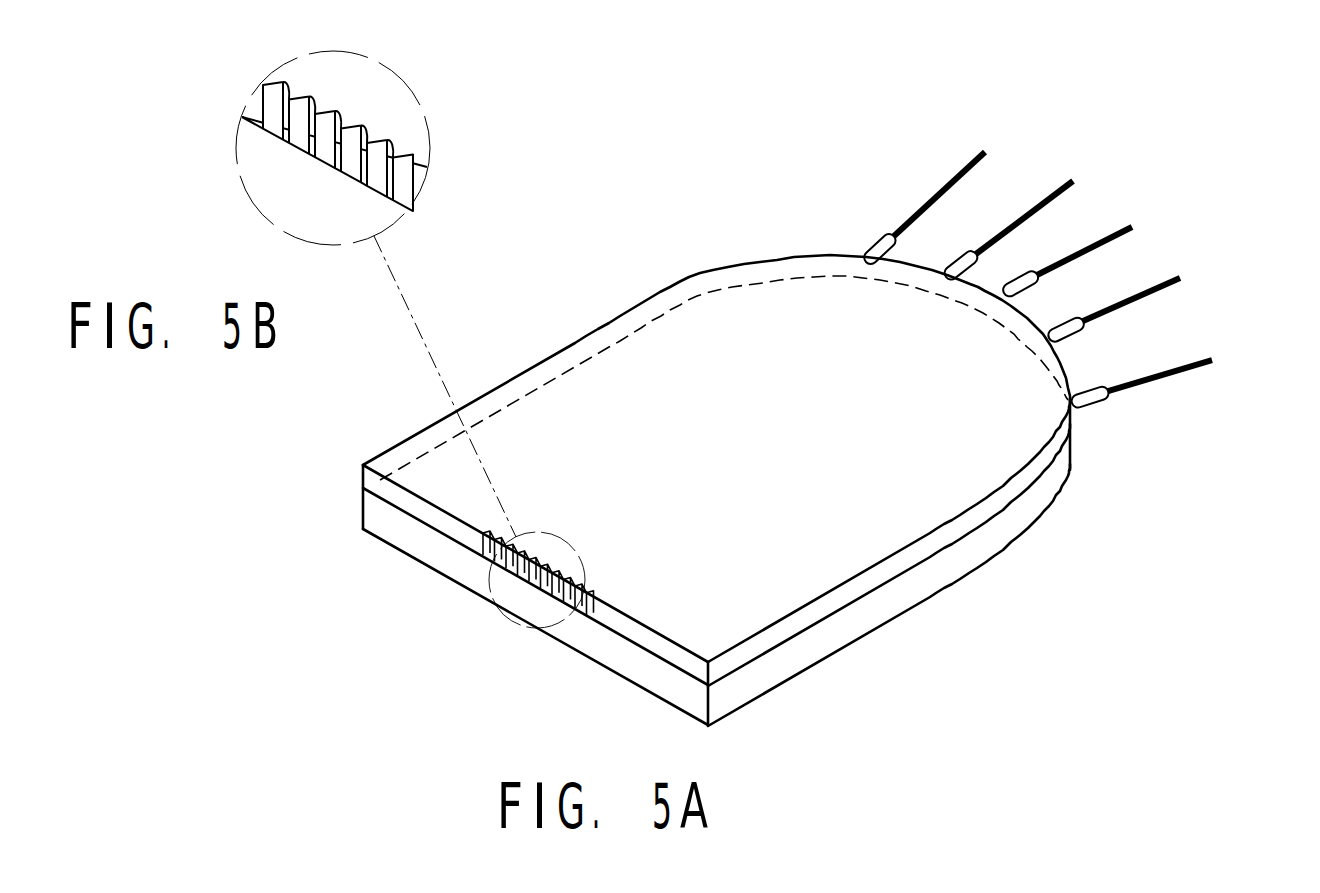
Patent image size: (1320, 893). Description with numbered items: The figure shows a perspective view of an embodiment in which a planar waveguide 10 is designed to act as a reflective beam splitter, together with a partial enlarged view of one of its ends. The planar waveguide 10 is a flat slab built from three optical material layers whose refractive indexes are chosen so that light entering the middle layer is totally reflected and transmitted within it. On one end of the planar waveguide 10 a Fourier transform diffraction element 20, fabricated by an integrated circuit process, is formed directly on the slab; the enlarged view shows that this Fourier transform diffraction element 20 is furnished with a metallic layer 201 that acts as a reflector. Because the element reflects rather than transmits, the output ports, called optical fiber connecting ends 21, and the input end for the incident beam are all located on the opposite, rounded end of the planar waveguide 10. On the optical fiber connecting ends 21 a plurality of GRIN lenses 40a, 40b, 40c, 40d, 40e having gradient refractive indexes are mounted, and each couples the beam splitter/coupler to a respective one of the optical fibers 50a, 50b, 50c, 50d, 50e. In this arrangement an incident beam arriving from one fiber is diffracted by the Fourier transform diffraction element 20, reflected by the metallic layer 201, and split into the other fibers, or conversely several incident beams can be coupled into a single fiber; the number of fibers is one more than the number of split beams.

In FIG. 5A, the planar waveguide 10 is at (862, 560).
In FIG. 5A, the Fourier transform diffraction element 20 is at (487, 581).
In FIG. 5B, the Fourier transform diffraction element 20 is at (331, 123).
In FIG. 5B, the metallic layer 201 is at (292, 120).
In FIG. 5A, the optical fiber connecting ends 21 is at (826, 255).
In FIG. 5A, the GRIN lens 40a is at (1012, 288).
In FIG. 5A, the GRIN lens 40b is at (880, 246).
In FIG. 5A, the GRIN lens 40c is at (950, 262).
In FIG. 5A, the GRIN lens 40d is at (1056, 328).
In FIG. 5A, the GRIN lens 40e is at (1079, 400).
In FIG. 5A, the optical fiber 50a is at (1135, 228).
In FIG. 5A, the optical fiber 50b is at (976, 160).
In FIG. 5A, the optical fiber 50c is at (1072, 181).
In FIG. 5A, the optical fiber 50d is at (1183, 285).
In FIG. 5A, the optical fiber 50e is at (1190, 370).